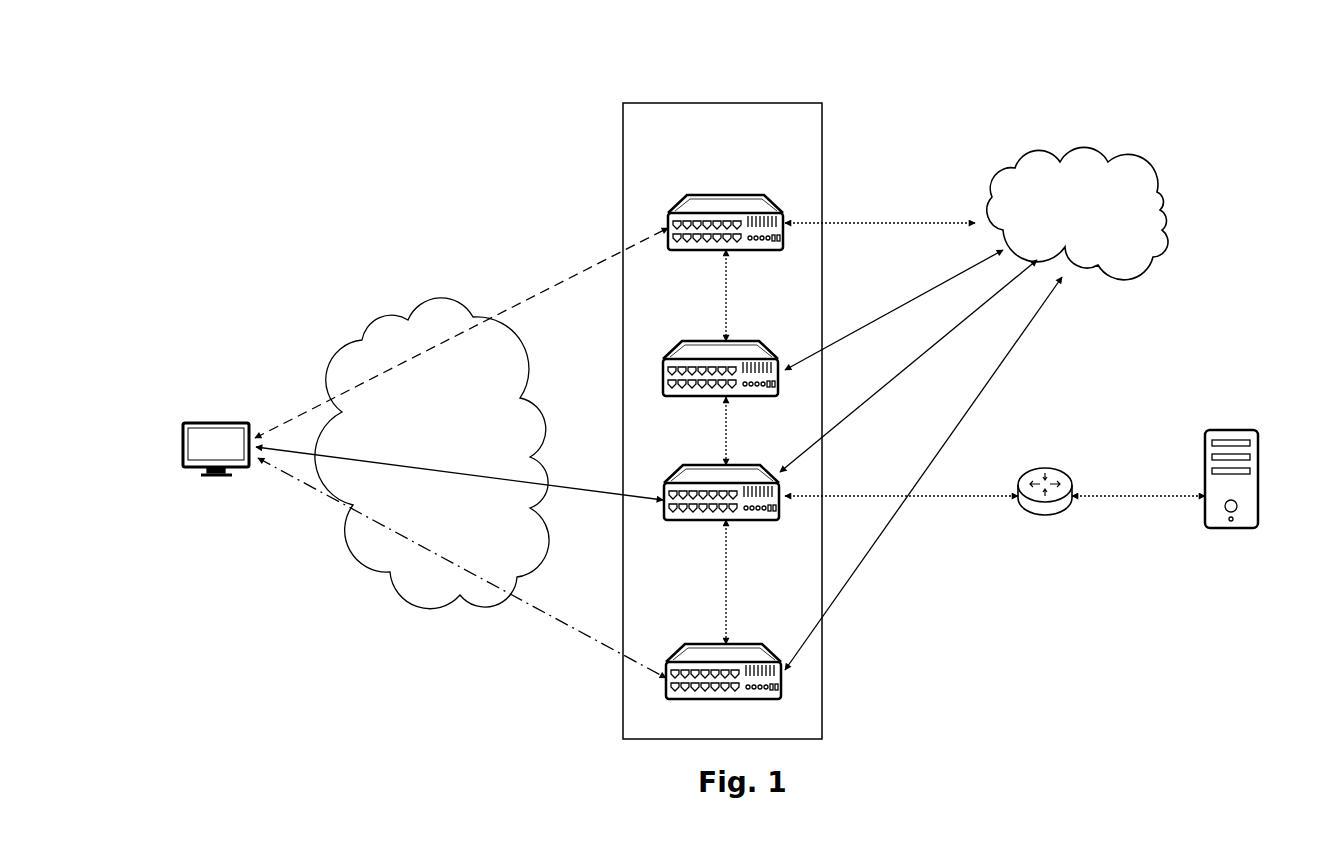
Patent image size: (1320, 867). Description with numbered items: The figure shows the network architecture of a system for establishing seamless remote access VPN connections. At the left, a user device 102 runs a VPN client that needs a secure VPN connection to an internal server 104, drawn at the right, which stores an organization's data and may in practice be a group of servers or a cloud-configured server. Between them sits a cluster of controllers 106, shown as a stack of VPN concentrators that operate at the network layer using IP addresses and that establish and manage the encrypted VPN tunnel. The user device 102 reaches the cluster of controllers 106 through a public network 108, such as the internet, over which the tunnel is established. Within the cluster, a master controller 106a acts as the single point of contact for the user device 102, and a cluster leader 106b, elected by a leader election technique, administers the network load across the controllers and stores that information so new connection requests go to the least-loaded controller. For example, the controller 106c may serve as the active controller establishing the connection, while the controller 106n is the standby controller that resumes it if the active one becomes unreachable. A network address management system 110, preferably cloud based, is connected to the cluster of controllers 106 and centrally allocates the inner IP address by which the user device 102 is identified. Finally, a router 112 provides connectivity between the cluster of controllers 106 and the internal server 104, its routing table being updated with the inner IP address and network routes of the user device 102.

The user device 102 is at (213, 422).
The internal server 104 is at (1245, 430).
The cluster of controllers 106 is at (822, 128).
The master controller 106a is at (750, 195).
The cluster leader 106b is at (740, 342).
The controller 106c is at (745, 465).
The controller 106n is at (745, 642).
The public network 108 is at (530, 393).
The network address management system 110 is at (1180, 198).
The router 112 is at (1050, 468).